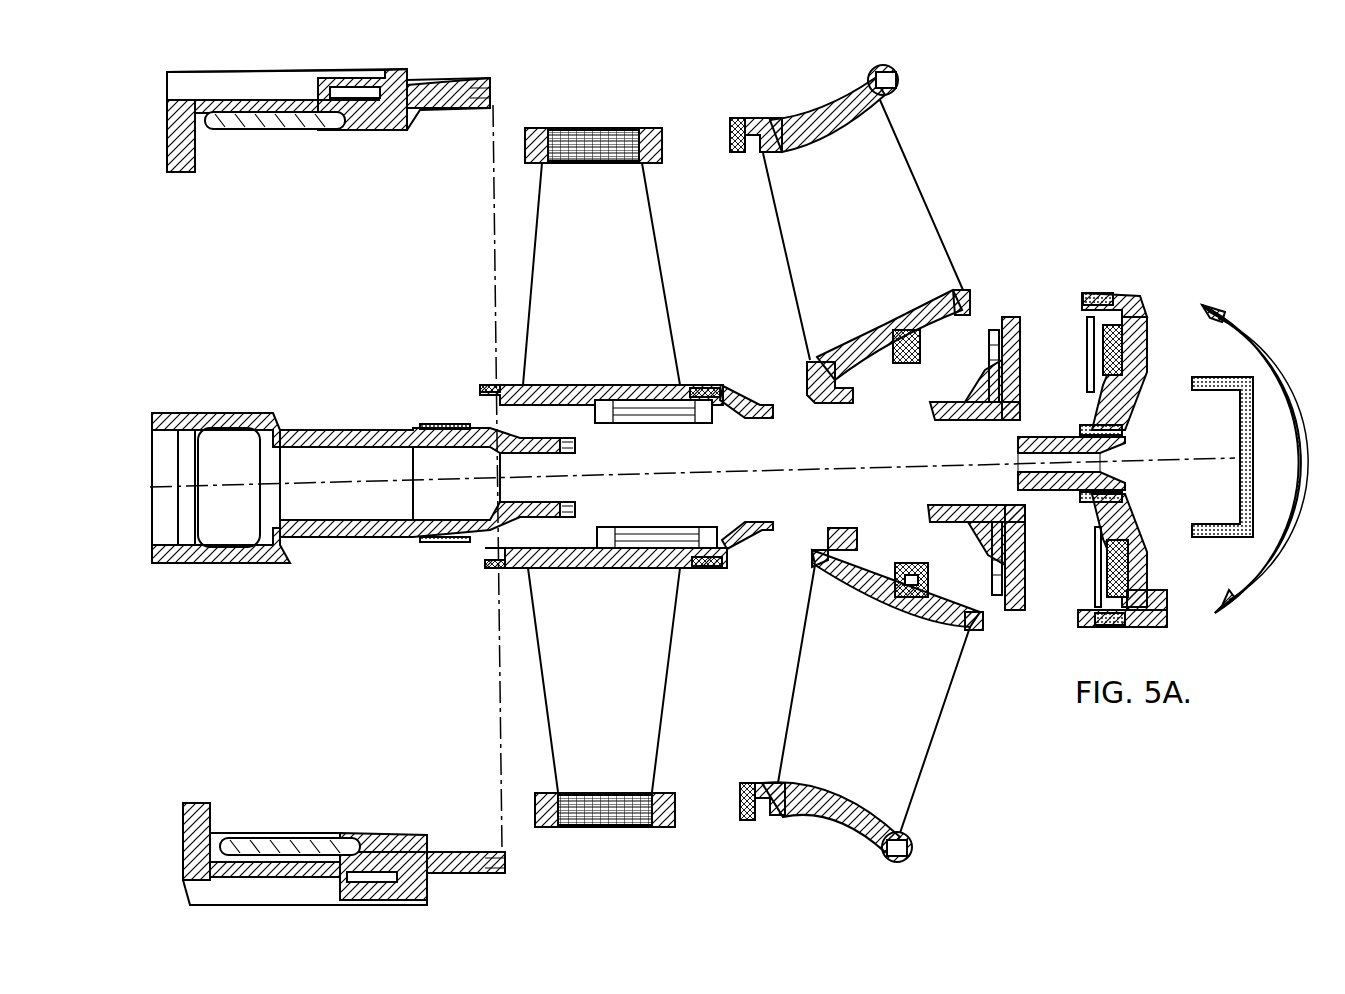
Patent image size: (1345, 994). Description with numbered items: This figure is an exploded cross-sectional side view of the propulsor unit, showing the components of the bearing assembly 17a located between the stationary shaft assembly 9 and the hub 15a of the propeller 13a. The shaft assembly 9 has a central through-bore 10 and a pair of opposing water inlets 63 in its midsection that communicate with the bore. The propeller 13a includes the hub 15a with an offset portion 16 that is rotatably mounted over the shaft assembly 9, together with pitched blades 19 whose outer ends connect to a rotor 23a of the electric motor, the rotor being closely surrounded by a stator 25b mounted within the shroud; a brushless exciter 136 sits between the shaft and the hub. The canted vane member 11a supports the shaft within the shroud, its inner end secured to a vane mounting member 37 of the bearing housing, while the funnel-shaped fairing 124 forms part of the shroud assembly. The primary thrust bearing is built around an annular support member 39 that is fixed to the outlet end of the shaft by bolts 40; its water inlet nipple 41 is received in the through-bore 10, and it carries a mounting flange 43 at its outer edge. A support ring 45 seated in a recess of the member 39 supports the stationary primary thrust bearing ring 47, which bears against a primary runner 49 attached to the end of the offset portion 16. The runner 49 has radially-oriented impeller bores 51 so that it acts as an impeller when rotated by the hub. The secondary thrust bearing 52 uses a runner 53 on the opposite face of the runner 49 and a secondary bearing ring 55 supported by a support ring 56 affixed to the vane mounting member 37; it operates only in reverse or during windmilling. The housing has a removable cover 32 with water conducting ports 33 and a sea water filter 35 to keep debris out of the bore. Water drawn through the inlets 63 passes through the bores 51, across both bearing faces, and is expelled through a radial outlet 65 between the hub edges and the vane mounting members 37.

The stationary shaft assembly 9 is at (375, 538).
The through-bore 10 is at (358, 455).
The vane member 11a is at (870, 250).
The propeller 13a is at (588, 742).
The hub 15a is at (688, 570).
The offset portion 16 is at (763, 412).
The bearing assembly 17a is at (1070, 600).
The pitched blades 19 is at (606, 283).
The rotor 23a is at (590, 140).
The stator 25b is at (275, 122).
The removable cover 32 is at (1262, 578).
The water conducting ports 33 is at (1295, 495).
The sea water filter 35 is at (1240, 482).
The vane mounting member 37 is at (880, 328).
The annular support member 39 is at (1143, 540).
The bolts 40 is at (1125, 425).
The water inlet nipple 41 is at (1068, 437).
The mounting flange 43 is at (1140, 608).
The support ring 45 is at (1100, 583).
The primary thrust bearing ring 47 is at (1098, 550).
The primary runner 49 is at (1018, 375).
The impeller bores 51 is at (994, 365).
The secondary thrust bearing 52 is at (945, 590).
The runner 53 is at (990, 573).
The secondary bearing ring 55 is at (932, 562).
The support ring 56 is at (905, 597).
The water inlet 63 is at (293, 545).
The radial outlet 65 is at (805, 566).
The funnel-shaped fairing 124 is at (822, 122).
The brushless exciter 136 is at (661, 412).